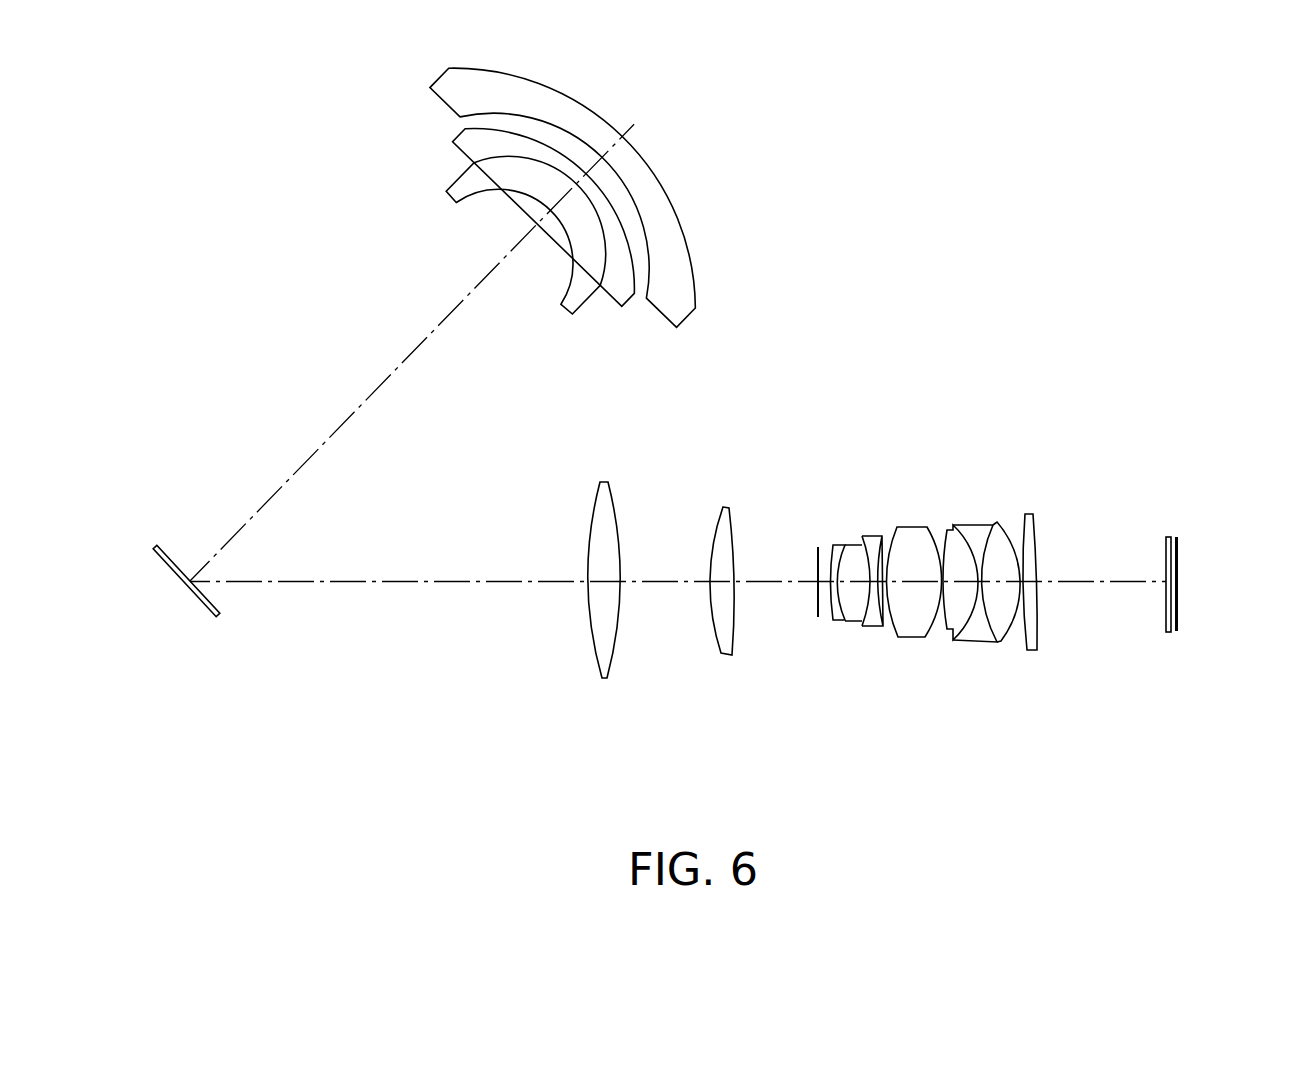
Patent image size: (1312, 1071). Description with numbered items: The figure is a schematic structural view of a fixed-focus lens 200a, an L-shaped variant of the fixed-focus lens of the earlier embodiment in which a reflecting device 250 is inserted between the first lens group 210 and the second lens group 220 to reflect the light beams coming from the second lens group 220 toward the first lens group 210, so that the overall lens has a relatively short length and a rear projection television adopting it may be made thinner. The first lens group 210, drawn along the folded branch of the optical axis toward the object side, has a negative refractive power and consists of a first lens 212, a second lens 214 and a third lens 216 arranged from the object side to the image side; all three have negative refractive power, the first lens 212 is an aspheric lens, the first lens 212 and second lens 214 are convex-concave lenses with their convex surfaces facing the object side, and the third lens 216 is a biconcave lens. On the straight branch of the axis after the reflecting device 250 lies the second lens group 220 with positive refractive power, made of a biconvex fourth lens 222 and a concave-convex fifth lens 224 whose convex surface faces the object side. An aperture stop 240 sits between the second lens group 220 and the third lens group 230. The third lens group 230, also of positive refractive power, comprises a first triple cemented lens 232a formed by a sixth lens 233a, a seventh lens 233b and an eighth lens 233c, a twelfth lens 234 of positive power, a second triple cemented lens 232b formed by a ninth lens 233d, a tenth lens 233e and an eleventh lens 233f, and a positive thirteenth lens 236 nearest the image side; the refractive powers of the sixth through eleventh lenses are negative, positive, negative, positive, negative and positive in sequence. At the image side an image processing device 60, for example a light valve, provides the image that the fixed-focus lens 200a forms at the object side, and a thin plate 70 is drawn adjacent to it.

The fixed-focus lens 200a is at (724, 447).
The first lens group 210 is at (588, 230).
The first lens 212 is at (676, 314).
The second lens 214 is at (611, 288).
The third lens 216 is at (543, 262).
The second lens group 220 is at (661, 645).
The fourth lens 222 is at (605, 667).
The fifth lens 224 is at (722, 638).
The third lens group 230 is at (964, 674).
The first triple cemented lens 232a is at (856, 662).
The sixth lens 233a is at (835, 614).
The seventh lens 233b is at (855, 612).
The eighth lens 233c is at (872, 624).
The twelfth lens 234 is at (913, 628).
The second triple cemented lens 232b is at (1020, 655).
The ninth lens 233d is at (953, 625).
The tenth lens 233e is at (978, 632).
The eleventh lens 233f is at (1002, 637).
The thirteenth lens 236 is at (1077, 651).
The aperture stop 240 is at (817, 597).
The reflecting device 250 is at (195, 597).
The image processing device 60 is at (1180, 573).
The cover glass / filter 70 is at (1165, 575).